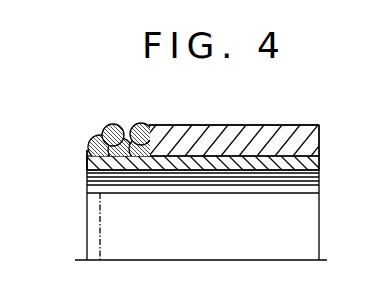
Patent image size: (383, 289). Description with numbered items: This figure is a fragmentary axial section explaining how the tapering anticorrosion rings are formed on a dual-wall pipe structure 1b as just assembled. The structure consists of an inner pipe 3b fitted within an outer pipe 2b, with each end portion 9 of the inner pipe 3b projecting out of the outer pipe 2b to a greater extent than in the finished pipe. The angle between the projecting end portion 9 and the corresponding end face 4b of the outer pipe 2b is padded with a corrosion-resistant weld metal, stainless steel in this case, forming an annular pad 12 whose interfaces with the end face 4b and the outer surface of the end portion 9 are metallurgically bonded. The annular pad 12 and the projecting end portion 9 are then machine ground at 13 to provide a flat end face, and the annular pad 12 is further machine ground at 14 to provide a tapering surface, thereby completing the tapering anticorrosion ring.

The dual-wall pipe structure 1b is at (324, 141).
The outer pipe 2b is at (263, 130).
The inner pipe 3b is at (318, 165).
The end face 4b is at (140, 124).
The end portion 9 is at (98, 163).
The annular pad 12 is at (96, 143).
The machine grinding location for flat end face 13 is at (100, 212).
The machine grinding location for tapering surface 14 is at (118, 123).